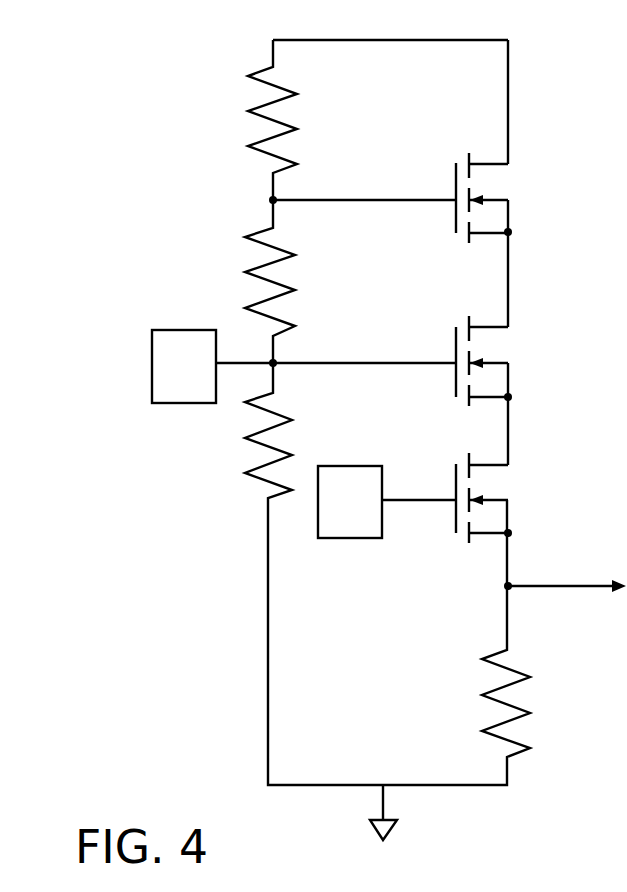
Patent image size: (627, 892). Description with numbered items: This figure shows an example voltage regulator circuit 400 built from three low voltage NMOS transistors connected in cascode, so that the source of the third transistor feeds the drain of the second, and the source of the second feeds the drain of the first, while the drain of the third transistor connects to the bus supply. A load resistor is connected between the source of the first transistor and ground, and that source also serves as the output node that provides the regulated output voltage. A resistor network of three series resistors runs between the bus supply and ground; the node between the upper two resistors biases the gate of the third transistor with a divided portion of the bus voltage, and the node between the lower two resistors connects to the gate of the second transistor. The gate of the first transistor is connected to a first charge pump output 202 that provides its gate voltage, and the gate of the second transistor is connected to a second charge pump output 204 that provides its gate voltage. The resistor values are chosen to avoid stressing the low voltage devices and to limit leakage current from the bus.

The voltage regulator circuit 400 is at (186, 58).
The first charge pump output 202 is at (350, 502).
The second charge pump output 204 is at (184, 366).